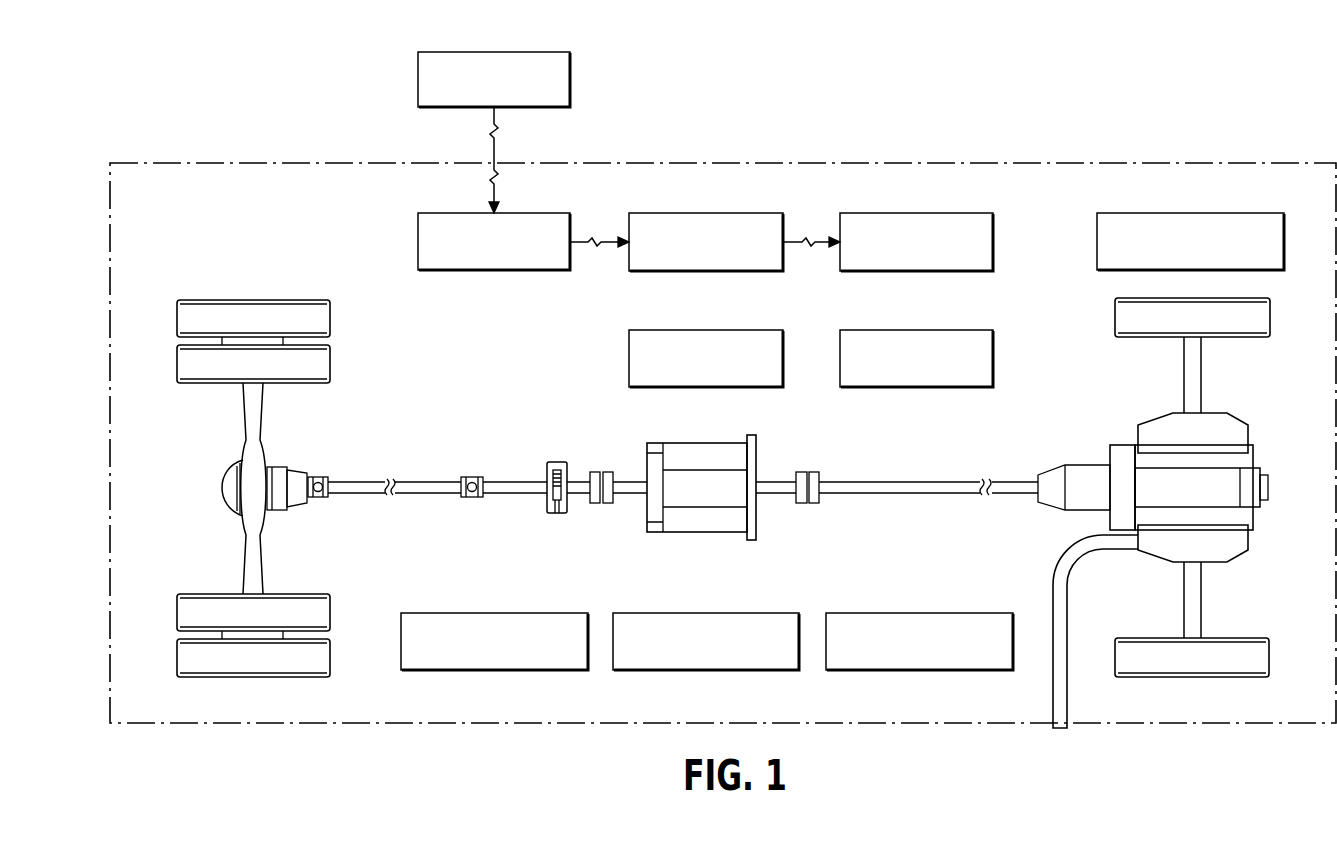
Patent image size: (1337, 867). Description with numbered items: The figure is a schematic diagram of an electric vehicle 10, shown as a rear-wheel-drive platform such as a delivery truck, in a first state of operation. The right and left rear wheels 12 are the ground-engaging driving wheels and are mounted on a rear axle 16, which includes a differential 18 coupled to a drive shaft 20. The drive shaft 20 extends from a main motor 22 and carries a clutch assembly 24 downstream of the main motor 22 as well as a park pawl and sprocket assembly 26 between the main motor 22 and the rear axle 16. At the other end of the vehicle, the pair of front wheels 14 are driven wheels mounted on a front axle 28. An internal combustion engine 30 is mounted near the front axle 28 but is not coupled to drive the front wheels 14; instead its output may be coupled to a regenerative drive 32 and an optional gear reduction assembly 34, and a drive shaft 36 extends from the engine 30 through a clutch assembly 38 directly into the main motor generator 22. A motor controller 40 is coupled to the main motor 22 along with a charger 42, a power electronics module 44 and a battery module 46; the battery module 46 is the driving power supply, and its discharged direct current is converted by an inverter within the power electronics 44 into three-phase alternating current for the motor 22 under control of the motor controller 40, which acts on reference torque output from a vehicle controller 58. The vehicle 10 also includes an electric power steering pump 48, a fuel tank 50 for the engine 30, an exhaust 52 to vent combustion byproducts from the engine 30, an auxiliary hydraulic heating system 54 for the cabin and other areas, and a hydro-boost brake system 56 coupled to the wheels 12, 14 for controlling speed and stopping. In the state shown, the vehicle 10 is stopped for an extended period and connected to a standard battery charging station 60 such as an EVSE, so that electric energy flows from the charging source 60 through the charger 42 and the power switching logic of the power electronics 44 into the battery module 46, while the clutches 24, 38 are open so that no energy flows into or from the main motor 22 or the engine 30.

The electric vehicle 10 is at (164, 163).
The rear wheels 12 is at (177, 322).
The front wheels 14 is at (1115, 321).
The rear axle 16 is at (245, 570).
The differential 18 is at (222, 478).
The drive shaft 20 is at (424, 498).
The main motor 22 is at (663, 532).
The clutch assembly 24 is at (596, 510).
The park pawl and sprocket assembly 26 is at (556, 513).
The front axle 28 is at (1182, 396).
The internal combustion engine 30 is at (1258, 455).
The regenerative drive 32 is at (1114, 445).
The gear reduction assembly 34 is at (1044, 506).
The drive shaft 36 is at (934, 496).
The clutch assembly 38 is at (805, 510).
The motor controller 40 is at (639, 330).
The charger 42 is at (432, 213).
The power electronics module 44 is at (639, 213).
The battery module 46 is at (850, 213).
The electric power steering pump 48 is at (1116, 213).
The fuel tank 50 is at (420, 613).
The exhaust 52 is at (1052, 598).
The auxiliary hydraulic heating system 54 is at (639, 613).
The hydro-boost brake system 56 is at (850, 613).
The vehicle controller 58 is at (850, 330).
The battery charging station 60 is at (427, 52).